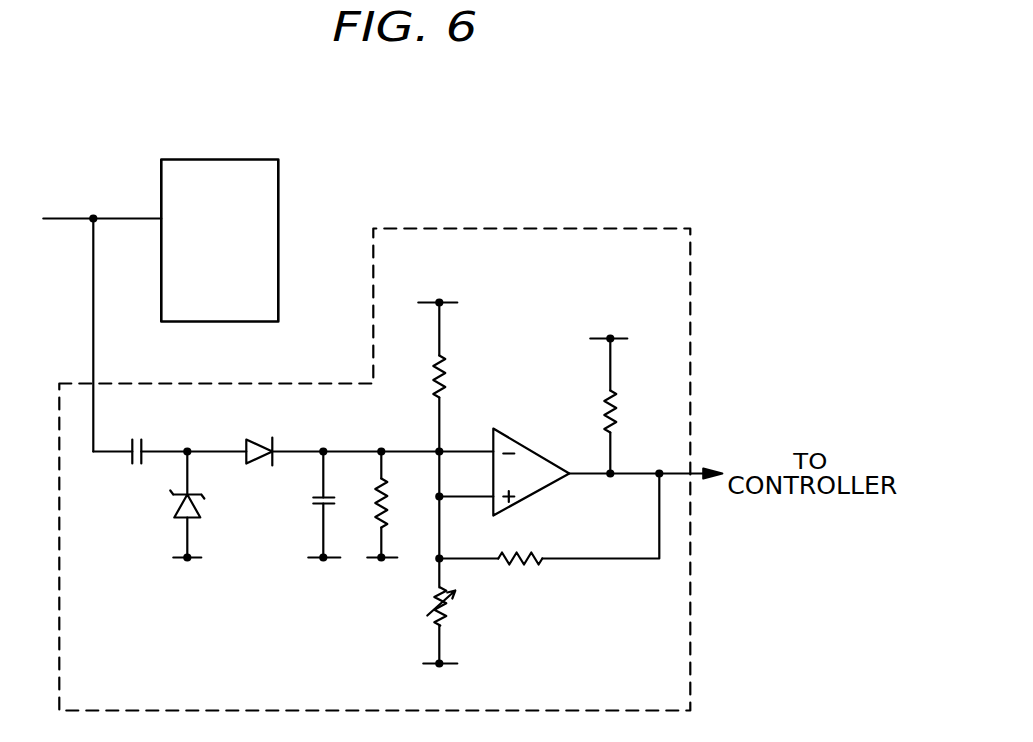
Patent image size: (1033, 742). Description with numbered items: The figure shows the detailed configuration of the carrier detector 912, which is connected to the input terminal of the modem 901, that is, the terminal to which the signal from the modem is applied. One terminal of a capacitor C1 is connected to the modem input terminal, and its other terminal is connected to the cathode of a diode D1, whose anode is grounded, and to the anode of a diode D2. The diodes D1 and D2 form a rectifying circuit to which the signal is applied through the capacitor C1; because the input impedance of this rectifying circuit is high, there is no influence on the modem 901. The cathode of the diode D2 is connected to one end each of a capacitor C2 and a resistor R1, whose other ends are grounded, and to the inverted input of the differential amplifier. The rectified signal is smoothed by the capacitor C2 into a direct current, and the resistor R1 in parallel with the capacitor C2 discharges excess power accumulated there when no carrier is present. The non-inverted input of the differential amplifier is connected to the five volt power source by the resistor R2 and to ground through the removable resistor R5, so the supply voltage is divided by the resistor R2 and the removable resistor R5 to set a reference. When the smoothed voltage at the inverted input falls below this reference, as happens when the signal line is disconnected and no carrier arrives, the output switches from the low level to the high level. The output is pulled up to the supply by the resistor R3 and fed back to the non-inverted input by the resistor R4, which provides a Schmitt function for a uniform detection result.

The modem 901 is at (221, 159).
The carrier detector 912 is at (625, 228).
The capacitor C1 is at (136, 438).
The capacitor C2 is at (307, 497).
The diode D1 is at (201, 507).
The diode D2 is at (266, 439).
The resistor R1 is at (396, 503).
The resistor R2 is at (459, 377).
The resistor R3 is at (628, 412).
The resistor R4 is at (520, 544).
The removable resistor R5 is at (456, 608).